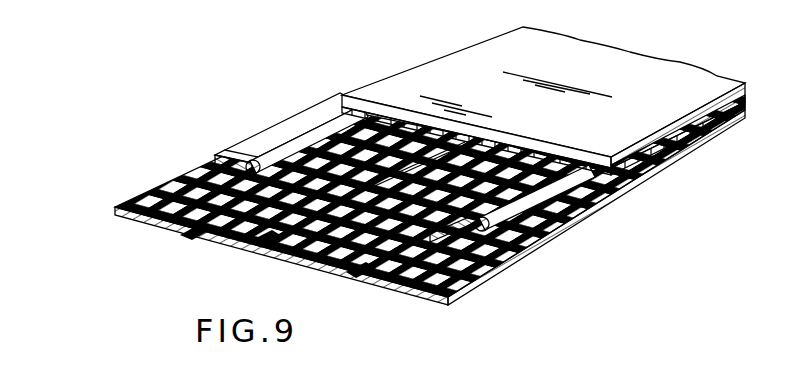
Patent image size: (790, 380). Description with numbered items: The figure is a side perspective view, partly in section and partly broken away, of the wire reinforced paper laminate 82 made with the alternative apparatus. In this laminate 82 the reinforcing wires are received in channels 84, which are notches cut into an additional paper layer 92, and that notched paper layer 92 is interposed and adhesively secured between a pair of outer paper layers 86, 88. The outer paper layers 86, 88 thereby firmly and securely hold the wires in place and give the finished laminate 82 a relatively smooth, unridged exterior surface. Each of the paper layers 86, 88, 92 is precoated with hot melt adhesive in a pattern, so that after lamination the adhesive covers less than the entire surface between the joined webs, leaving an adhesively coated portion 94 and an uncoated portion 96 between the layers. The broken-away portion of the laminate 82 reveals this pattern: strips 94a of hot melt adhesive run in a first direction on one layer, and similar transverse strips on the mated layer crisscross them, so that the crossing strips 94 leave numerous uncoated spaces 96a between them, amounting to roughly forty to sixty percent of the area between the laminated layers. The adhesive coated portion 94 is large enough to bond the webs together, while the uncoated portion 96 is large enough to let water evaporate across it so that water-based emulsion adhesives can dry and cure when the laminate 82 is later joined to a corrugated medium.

The wire reinforced paper laminate 82 is at (408, 70).
The channels 84 is at (565, 162).
The outer paper layer 86 is at (620, 199).
The outer paper layer 88 is at (660, 137).
The additional paper layer 92 is at (685, 138).
The adhesively coated portion 94 is at (483, 269).
The strips of hot melt adhesive 94a is at (190, 227).
The uncoated portion 96 is at (190, 180).
The uncoated spaces 96a is at (302, 135).